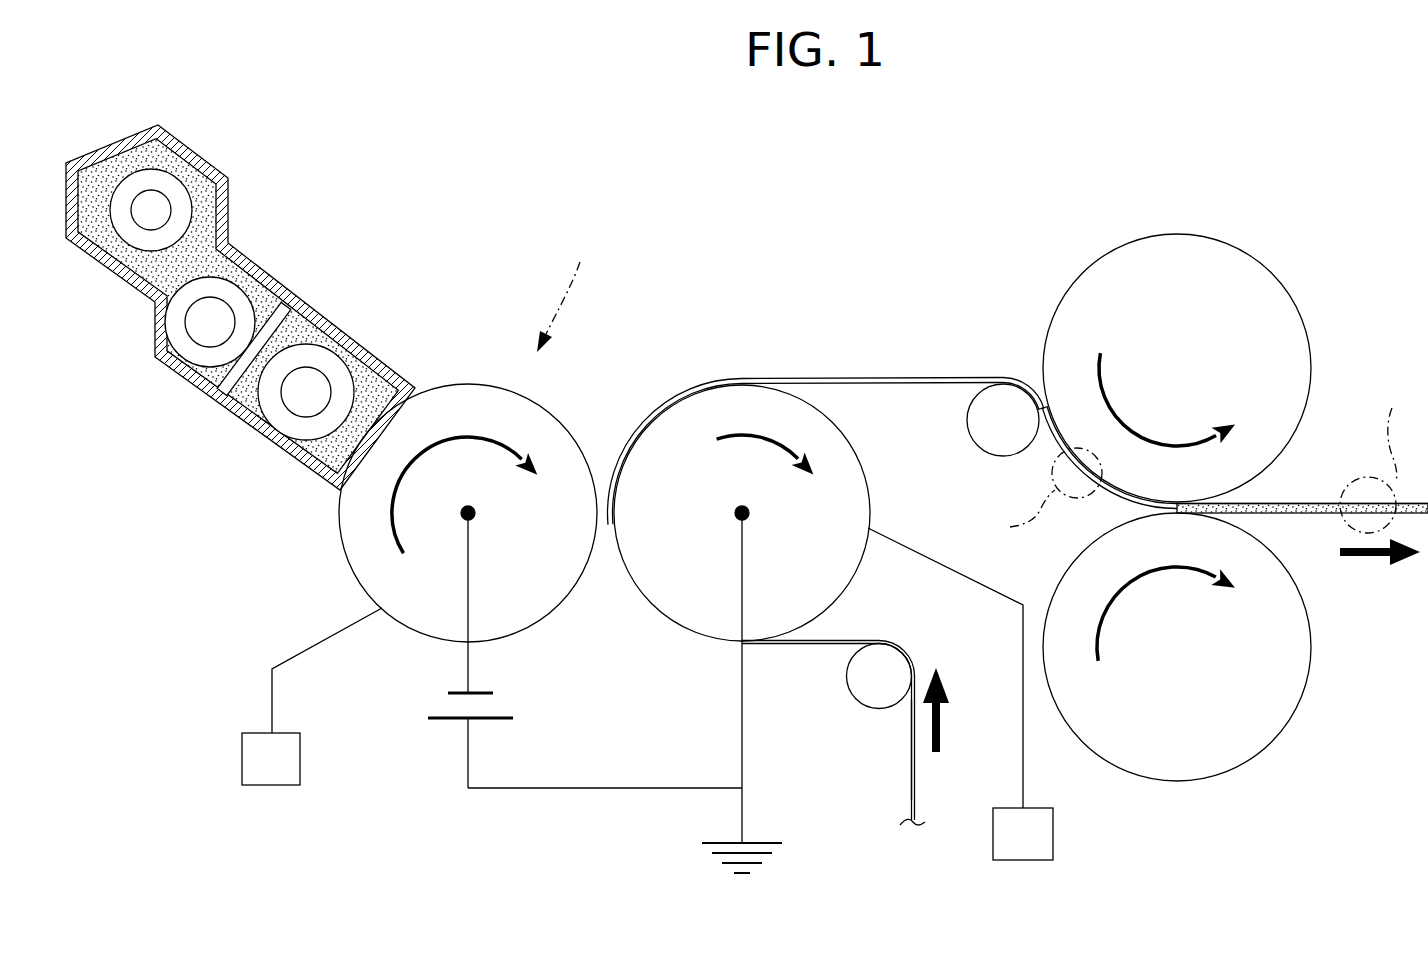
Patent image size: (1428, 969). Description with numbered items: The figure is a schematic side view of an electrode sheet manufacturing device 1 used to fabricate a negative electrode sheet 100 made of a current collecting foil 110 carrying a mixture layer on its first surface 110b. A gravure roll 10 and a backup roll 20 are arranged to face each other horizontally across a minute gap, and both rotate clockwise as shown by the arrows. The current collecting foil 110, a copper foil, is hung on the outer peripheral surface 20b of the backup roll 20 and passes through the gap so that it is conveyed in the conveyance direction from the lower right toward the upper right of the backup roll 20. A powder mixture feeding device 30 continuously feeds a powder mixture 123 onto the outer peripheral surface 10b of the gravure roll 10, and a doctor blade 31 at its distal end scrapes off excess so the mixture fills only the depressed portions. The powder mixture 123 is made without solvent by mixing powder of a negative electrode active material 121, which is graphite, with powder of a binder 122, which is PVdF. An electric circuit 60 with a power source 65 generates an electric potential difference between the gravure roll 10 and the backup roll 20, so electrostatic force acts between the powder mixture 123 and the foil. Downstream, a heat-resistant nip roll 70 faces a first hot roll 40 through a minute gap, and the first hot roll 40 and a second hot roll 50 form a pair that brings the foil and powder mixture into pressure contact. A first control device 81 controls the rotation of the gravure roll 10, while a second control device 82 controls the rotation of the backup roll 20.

The electrode sheet manufacturing device 1 is at (1120, 163).
The gravure roll 10 is at (436, 585).
The outer peripheral surface of the gravure roll 10b is at (368, 595).
The backup roll 20 is at (703, 585).
The outer peripheral surface of the backup roll 20b is at (845, 600).
The powder mixture feeding device 30 is at (263, 238).
The doctor blade 31 is at (390, 368).
The first hot roll 40 is at (1261, 355).
The second hot roll 50 is at (1261, 682).
The electric circuit 60 is at (627, 790).
The power source 65 is at (443, 717).
The nip roll 70 is at (993, 437).
The first control device 81 is at (287, 773).
The second control device 82 is at (1039, 851).
The negative electrode sheet 100 is at (1296, 503).
The current collecting foil 110 is at (918, 792).
The first surface of the current collecting foil 110b is at (913, 797).
The negative electrode active material 121 is at (245, 310).
The binder 122 is at (272, 310).
The powder mixture 123 is at (315, 323).